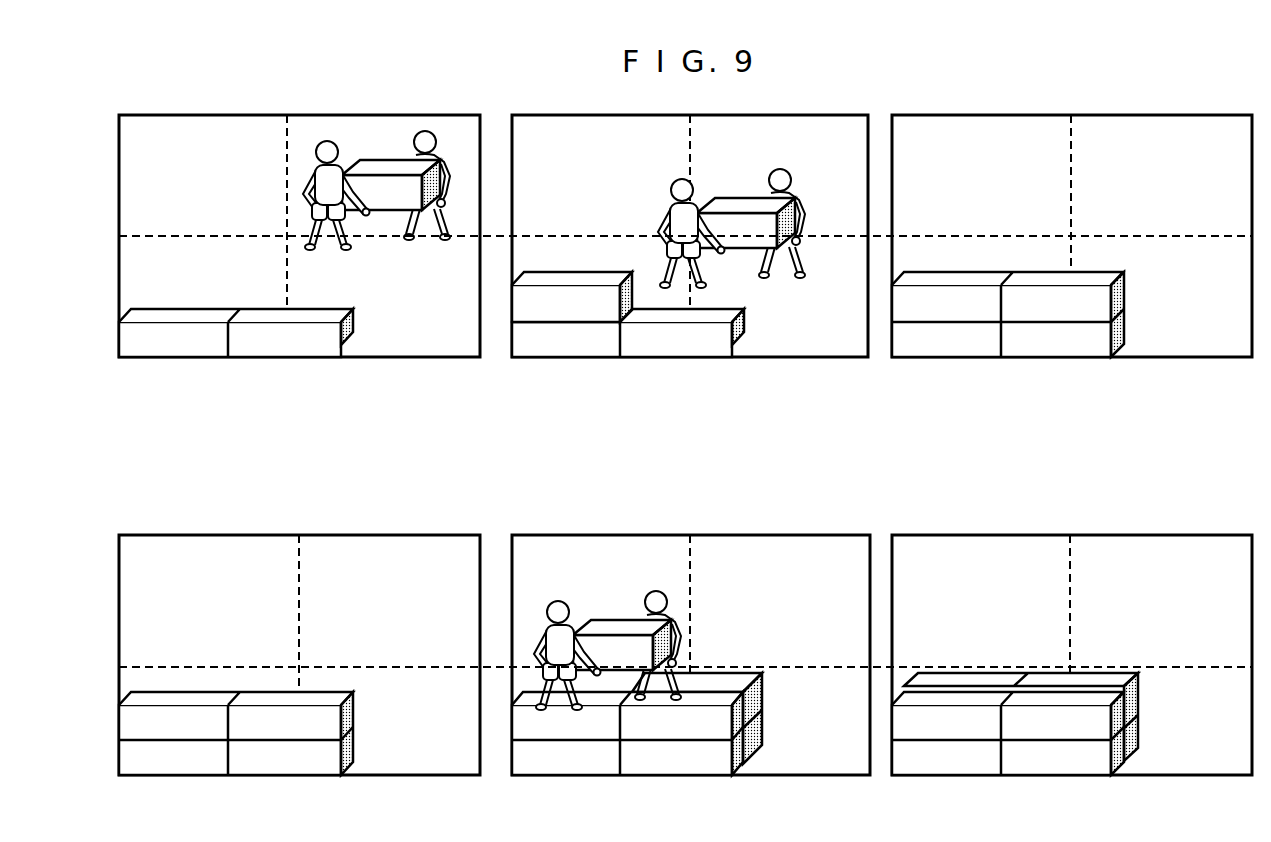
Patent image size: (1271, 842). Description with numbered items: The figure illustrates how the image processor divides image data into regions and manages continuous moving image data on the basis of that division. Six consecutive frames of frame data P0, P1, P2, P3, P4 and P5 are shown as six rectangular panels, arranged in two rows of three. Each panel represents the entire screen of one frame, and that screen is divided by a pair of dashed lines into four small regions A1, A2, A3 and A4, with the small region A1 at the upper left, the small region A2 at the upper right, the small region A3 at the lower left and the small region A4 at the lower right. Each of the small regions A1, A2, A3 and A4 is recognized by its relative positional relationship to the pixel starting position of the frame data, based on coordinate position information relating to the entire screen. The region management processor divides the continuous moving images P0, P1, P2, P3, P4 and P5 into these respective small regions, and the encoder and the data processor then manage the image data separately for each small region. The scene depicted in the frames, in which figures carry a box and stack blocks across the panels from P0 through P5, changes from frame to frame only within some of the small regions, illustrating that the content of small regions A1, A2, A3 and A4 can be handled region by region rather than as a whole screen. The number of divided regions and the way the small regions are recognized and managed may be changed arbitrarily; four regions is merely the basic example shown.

The frame data P0 is at (299, 221).
The frame data P1 is at (690, 221).
The frame data P2 is at (1072, 221).
The frame data P3 is at (299, 640).
The frame data P4 is at (691, 640).
The frame data P5 is at (1072, 640).
The small region A1 is at (535, 350).
The small region A2 is at (714, 349).
The small region A3 is at (538, 507).
The small region A4 is at (831, 541).